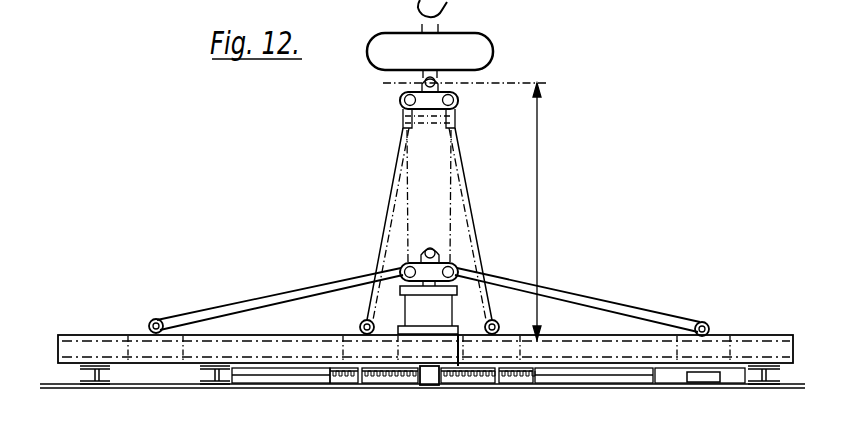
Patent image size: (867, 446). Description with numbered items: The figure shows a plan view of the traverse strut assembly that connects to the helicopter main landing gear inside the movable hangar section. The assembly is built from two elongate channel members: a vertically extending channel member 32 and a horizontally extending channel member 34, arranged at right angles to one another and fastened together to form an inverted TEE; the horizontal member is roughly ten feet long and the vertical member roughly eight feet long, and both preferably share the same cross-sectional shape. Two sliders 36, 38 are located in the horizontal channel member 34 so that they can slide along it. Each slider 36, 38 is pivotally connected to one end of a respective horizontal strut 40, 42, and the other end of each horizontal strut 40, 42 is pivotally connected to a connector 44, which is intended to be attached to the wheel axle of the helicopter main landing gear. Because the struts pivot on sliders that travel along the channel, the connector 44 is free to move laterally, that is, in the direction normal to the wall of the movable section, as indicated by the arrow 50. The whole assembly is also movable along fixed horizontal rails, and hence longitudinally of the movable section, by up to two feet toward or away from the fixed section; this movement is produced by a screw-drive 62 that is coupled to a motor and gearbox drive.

The vertically extending channel member 32 is at (442, 350).
The horizontally extending channel member 34 is at (793, 348).
The slider 36 is at (712, 350).
The slider 38 is at (141, 350).
The horizontal strut 40 is at (583, 300).
The horizontal strut 42 is at (251, 306).
The connector 44 is at (414, 84).
The arrow 50 is at (537, 155).
The screw-drive 62 is at (413, 382).